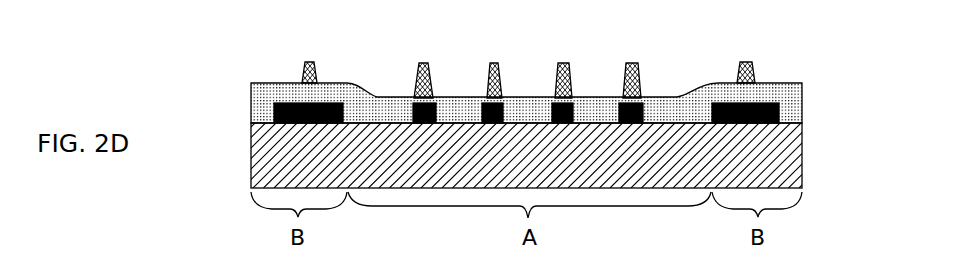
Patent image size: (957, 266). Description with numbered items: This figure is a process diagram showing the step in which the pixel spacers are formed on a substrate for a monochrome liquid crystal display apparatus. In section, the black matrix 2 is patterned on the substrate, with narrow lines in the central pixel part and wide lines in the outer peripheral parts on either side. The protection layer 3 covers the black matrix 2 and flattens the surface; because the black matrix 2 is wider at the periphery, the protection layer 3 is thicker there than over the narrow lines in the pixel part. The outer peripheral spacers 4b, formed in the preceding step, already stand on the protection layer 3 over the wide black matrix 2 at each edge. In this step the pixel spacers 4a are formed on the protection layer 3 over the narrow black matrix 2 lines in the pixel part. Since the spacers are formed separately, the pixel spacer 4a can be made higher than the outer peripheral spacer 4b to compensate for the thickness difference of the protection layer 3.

The black matrix 2 is at (436, 117).
The protection layer 3 is at (778, 95).
The pixel spacer 4a is at (424, 62).
The outer peripheral spacer 4b is at (308, 62).